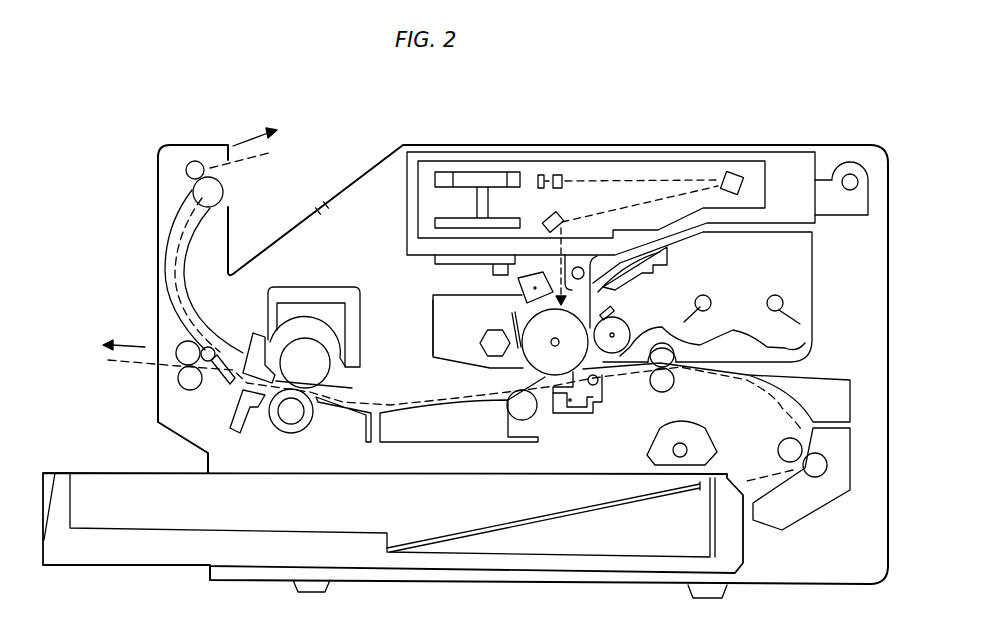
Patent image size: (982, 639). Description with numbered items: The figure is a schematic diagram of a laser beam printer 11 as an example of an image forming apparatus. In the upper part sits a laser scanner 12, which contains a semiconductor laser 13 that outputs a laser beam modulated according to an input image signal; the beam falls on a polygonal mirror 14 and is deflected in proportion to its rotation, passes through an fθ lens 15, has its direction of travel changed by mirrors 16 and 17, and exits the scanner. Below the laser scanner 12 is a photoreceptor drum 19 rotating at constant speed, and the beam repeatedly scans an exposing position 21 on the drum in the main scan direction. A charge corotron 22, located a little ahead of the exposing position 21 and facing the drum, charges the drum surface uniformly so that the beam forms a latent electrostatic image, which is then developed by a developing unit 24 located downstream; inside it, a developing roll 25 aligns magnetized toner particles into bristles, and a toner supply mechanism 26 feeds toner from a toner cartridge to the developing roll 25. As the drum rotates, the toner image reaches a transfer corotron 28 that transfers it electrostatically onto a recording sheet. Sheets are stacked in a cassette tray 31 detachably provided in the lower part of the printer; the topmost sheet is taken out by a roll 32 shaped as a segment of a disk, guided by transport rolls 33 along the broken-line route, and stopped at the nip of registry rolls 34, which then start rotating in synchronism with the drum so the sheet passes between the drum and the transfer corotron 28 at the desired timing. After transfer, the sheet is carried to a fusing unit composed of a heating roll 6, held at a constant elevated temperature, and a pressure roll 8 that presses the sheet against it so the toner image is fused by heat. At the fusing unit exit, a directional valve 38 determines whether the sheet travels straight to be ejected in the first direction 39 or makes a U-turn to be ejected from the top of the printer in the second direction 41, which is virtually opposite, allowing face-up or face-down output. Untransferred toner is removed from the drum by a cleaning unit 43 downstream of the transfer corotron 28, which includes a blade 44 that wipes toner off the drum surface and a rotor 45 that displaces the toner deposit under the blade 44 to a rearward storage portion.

The heating roll 6 is at (335, 375).
The pressure roll 8 is at (308, 428).
The laser beam printer 11 is at (813, 145).
The laser scanner 12 is at (638, 160).
The semiconductor laser 13 is at (538, 175).
The polygonal mirror 14 is at (475, 170).
The fθ lens 15 is at (558, 175).
The mirror 16 is at (728, 174).
The mirror 17 is at (565, 215).
The photoreceptor drum 19 is at (537, 373).
The exposing position 21 is at (668, 263).
The charge corotron 22 is at (517, 284).
The developing unit 24 is at (812, 266).
The developing roll 25 is at (628, 318).
The toner supply mechanism 26 is at (718, 312).
The transfer corotron 28 is at (575, 420).
The cassette tray 31 is at (112, 482).
The roll 32 is at (652, 428).
The transport rolls 33 is at (780, 443).
The registry rolls 34 is at (673, 385).
The directional valve 38 is at (222, 383).
The first direction 39 is at (128, 345).
The second direction 41 is at (257, 132).
The cleaning unit 43 is at (432, 298).
The blade 44 is at (512, 318).
The rotor 45 is at (433, 340).